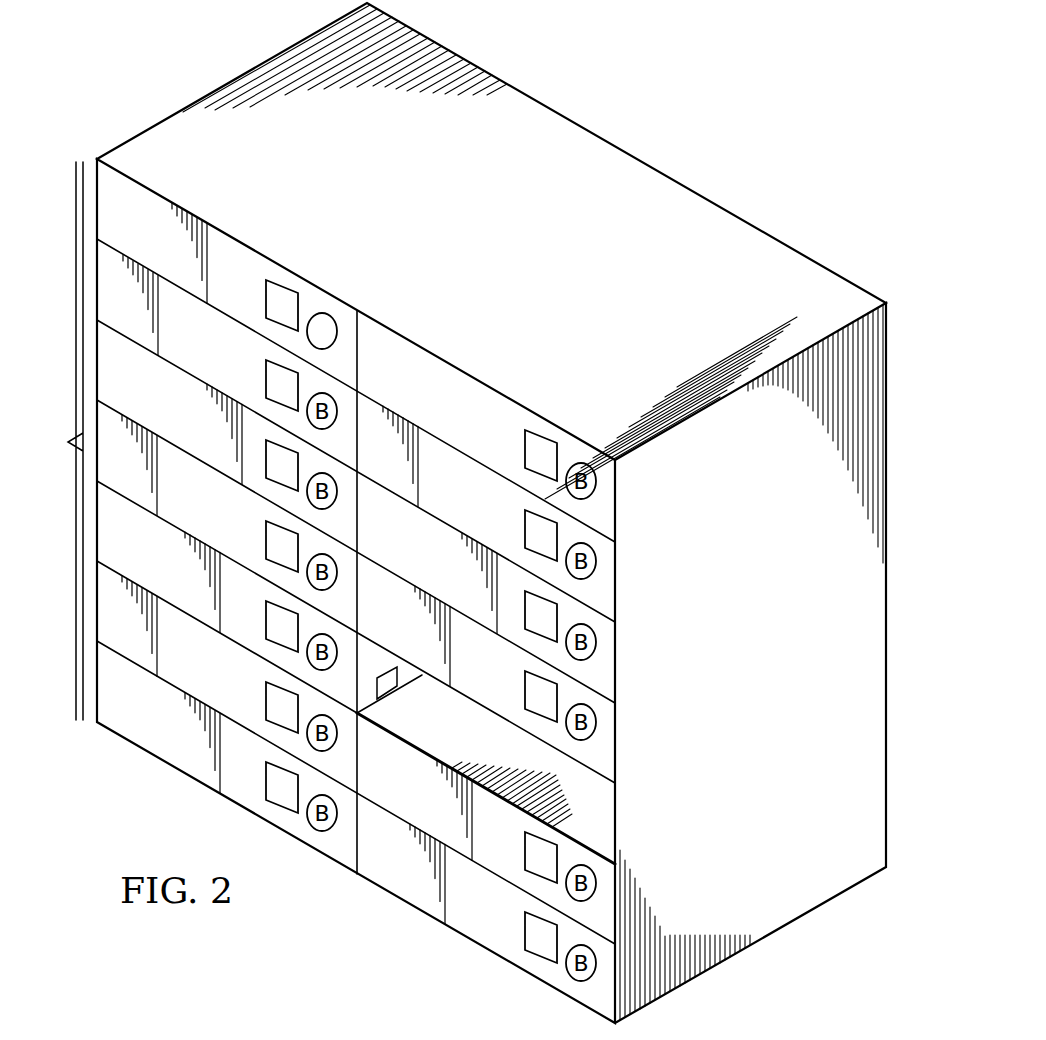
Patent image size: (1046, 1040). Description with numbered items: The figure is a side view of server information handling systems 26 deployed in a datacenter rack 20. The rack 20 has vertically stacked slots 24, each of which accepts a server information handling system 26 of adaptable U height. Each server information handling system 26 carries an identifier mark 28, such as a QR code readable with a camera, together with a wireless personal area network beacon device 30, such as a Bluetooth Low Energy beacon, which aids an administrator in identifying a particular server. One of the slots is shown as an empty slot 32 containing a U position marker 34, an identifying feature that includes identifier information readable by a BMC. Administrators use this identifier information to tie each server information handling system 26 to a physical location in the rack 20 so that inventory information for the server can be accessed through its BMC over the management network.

The datacenter rack 20 is at (696, 160).
The slot 24 is at (315, 553).
The server information handling system 26 is at (509, 415).
The identifier mark 28 is at (264, 296).
The wireless personal area network beacon device 30 is at (324, 312).
The empty slot 32 is at (604, 806).
The U position marker 34 is at (388, 686).